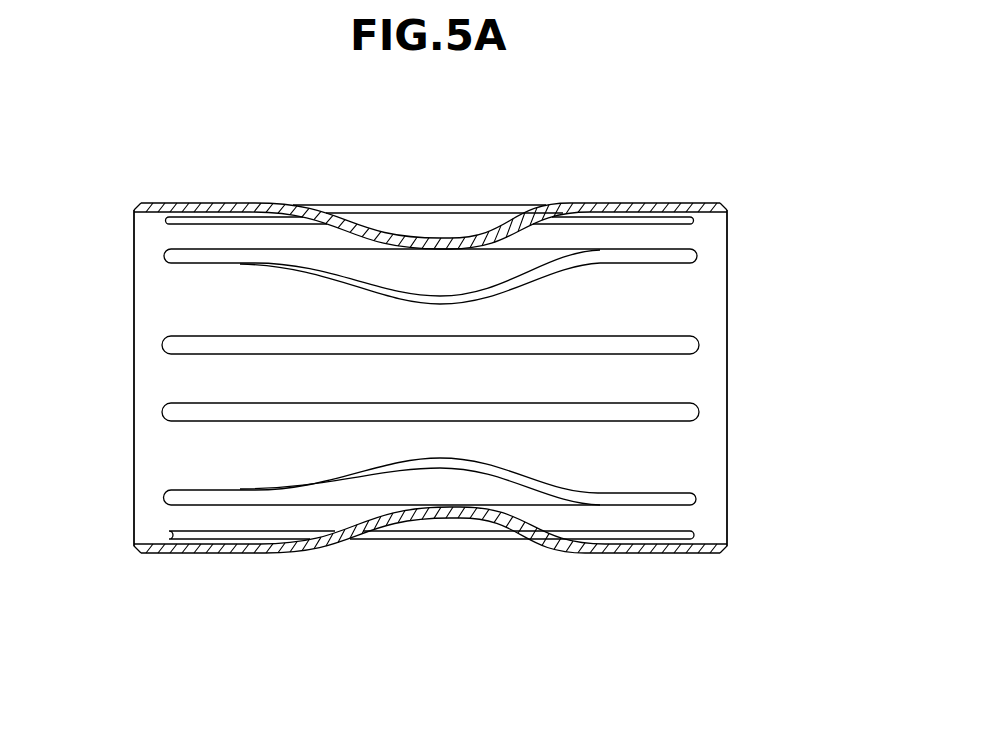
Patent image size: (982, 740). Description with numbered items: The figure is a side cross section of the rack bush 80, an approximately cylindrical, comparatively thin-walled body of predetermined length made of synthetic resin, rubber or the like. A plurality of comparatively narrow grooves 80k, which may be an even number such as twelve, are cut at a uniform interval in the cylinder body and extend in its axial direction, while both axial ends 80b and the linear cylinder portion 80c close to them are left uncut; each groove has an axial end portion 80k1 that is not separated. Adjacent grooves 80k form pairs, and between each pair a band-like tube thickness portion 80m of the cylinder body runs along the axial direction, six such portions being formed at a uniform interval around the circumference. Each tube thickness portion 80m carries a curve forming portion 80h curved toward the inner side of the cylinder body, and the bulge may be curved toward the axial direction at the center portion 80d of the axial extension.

The rack bush 80 is at (587, 152).
The end 80b is at (134, 236).
The linear cylinder portion 80c is at (134, 277).
The center portion 80d is at (420, 190).
The curve forming portion 80h is at (430, 243).
The groove 80k is at (593, 255).
The axial end portion 80k1 is at (687, 345).
The tube thickness portion 80m is at (203, 306).